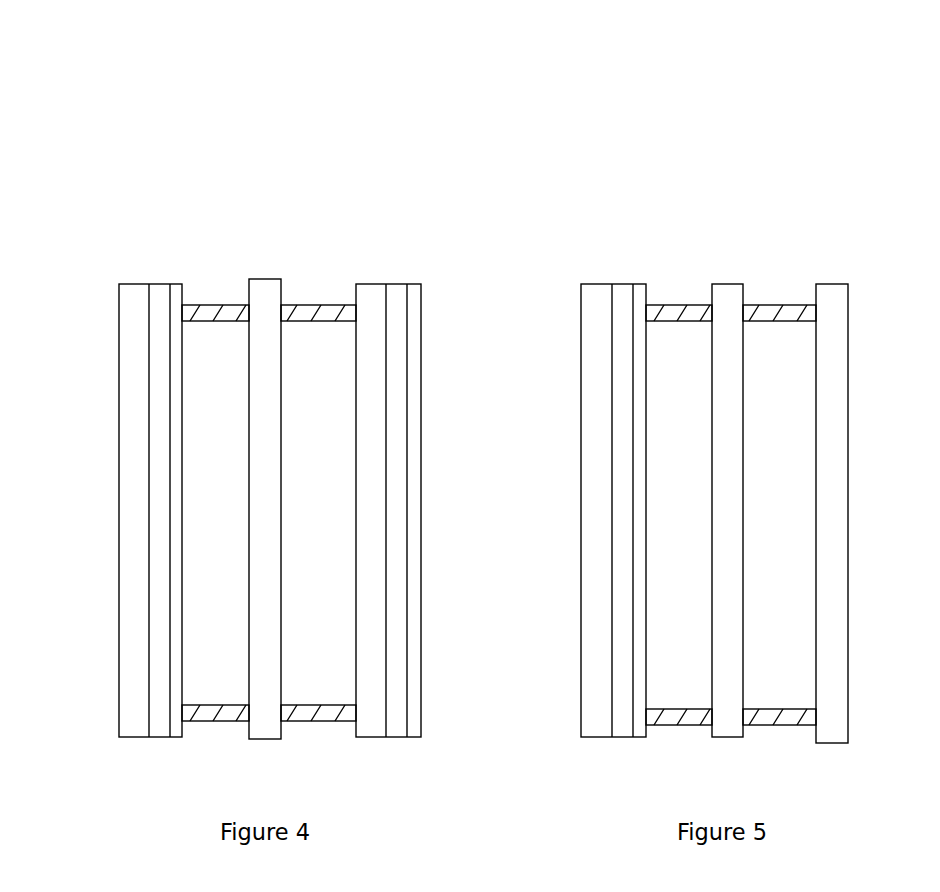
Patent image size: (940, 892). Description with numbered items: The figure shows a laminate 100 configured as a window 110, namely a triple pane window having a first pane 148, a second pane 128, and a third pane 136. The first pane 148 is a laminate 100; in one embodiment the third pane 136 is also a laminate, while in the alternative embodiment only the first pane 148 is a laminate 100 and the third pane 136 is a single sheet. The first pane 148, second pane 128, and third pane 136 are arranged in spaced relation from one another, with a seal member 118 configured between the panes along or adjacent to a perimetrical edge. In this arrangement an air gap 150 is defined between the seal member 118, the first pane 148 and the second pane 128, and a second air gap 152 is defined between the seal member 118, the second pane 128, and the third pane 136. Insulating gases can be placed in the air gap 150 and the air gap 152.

In FIG. 4, the laminate 100 is at (135, 257).
In FIG. 5, the laminate 100 is at (610, 220).
In FIG. 4, the window 110 is at (297, 140).
In FIG. 5, the window 110 is at (777, 112).
In FIG. 4, the seal member 118 is at (215, 313).
In FIG. 5, the seal member 118 is at (678, 313).
In FIG. 4, the second pane 128 is at (267, 260).
In FIG. 5, the second pane 128 is at (728, 260).
In FIG. 4, the third pane 136 is at (450, 292).
In FIG. 5, the third pane 136 is at (863, 307).
In FIG. 4, the first pane 148 is at (105, 377).
In FIG. 5, the first pane 148 is at (567, 377).
In FIG. 4, the air gap 150 is at (202, 517).
In FIG. 5, the air gap 150 is at (665, 517).
In FIG. 4, the air gap 152 is at (300, 517).
In FIG. 5, the air gap 152 is at (765, 517).